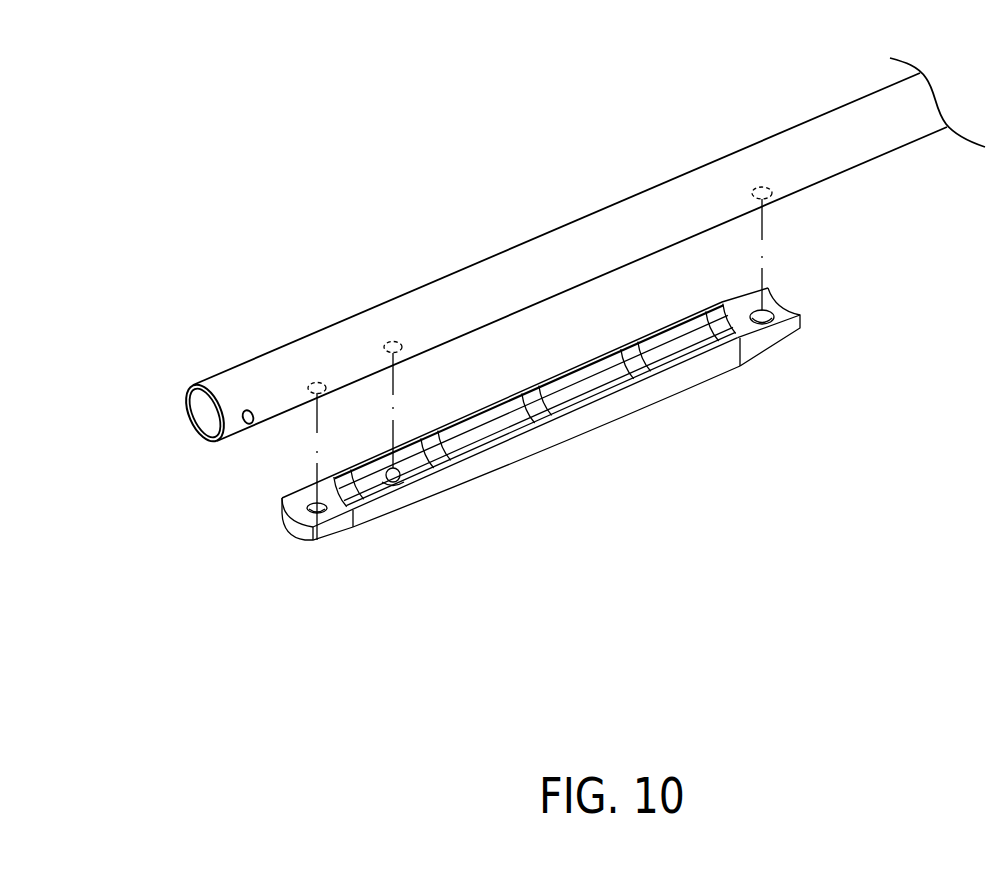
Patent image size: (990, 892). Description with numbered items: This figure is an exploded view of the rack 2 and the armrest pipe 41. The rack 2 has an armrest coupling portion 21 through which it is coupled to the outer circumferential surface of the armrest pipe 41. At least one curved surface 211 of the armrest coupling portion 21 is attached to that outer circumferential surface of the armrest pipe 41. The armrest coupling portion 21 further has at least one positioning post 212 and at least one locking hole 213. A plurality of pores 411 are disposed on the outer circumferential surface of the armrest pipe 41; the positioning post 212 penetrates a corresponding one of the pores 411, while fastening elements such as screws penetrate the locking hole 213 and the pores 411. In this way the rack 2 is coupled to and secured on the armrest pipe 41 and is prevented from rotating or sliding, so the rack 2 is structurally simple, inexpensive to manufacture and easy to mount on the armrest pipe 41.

The armrest pipe 41 is at (527, 267).
The pores 411 is at (313, 385).
The rack 2 is at (673, 382).
The armrest coupling portion 21 is at (590, 518).
The curved surface 211 is at (337, 500).
The positioning post 212 is at (400, 476).
The locking hole 213 is at (312, 528).